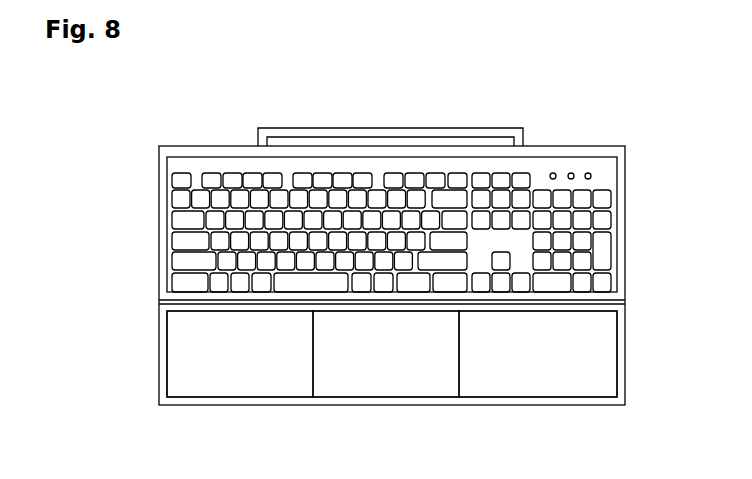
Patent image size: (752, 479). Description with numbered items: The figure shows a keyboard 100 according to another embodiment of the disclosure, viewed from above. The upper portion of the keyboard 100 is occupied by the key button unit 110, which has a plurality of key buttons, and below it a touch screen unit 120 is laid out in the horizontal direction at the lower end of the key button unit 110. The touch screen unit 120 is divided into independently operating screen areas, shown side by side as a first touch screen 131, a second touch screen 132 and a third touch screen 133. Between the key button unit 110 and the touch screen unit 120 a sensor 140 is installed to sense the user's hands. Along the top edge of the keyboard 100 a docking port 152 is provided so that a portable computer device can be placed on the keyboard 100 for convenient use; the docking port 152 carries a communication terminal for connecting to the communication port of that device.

The keyboard 100 is at (134, 144).
The key button unit 110 is at (166, 238).
The touch screen unit 120 is at (166, 350).
The first touch screen 131 is at (537, 385).
The second touch screen 132 is at (389, 385).
The third touch screen 133 is at (248, 385).
The sensor 140 is at (164, 310).
The docking port 152 is at (277, 134).